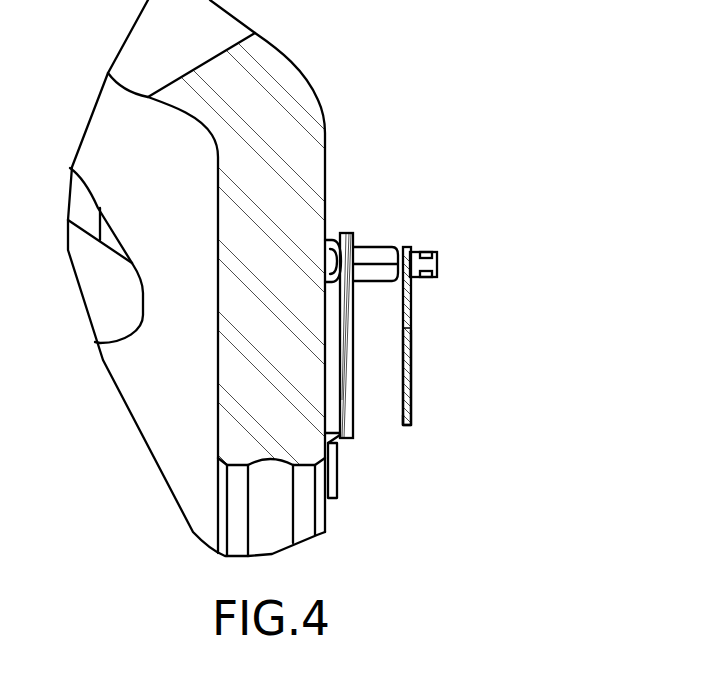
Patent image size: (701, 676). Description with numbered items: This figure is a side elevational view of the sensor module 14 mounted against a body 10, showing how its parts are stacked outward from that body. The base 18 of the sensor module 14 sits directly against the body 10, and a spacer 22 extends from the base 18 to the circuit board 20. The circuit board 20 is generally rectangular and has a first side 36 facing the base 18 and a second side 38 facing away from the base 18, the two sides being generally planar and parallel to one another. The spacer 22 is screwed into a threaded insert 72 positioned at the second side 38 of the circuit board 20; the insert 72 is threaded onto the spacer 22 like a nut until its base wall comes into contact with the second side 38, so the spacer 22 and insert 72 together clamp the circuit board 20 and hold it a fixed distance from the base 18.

The vehicle body panel 10 is at (310, 90).
The sensor module 14 is at (483, 329).
The base 18 is at (345, 233).
The circuit board 20 is at (407, 308).
The spacers 22 is at (387, 247).
The first side 36 is at (402, 412).
The second side 38 is at (410, 391).
The threaded inserts 72 is at (437, 263).